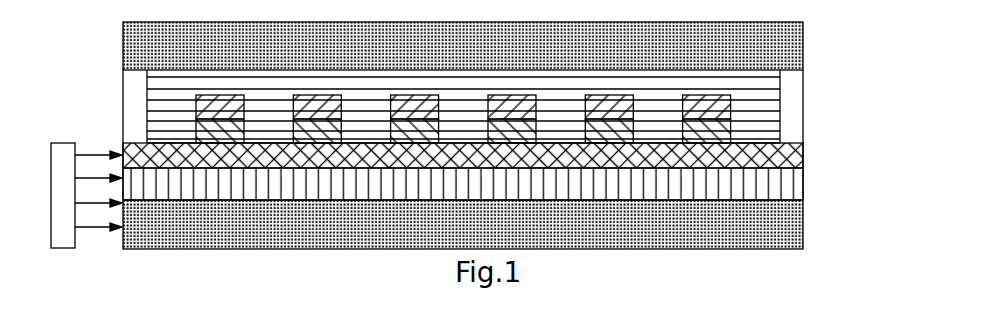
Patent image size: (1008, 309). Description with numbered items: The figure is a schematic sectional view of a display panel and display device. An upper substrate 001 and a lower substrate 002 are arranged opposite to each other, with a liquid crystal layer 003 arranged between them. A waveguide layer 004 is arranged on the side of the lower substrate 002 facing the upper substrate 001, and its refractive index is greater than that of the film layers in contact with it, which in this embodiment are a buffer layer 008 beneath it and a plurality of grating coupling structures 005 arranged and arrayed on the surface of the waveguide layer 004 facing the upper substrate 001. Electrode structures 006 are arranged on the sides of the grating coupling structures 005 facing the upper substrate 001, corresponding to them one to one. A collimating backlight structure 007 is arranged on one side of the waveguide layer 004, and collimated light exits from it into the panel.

The upper substrate 001 is at (790, 47).
The lower substrate 002 is at (803, 223).
The liquid crystal layer 003 is at (770, 80).
The waveguide layer 004 is at (803, 154).
The grating coupling structures 005 is at (740, 126).
The electrode structures 006 is at (780, 104).
The collimating backlight structure 007 is at (70, 152).
The buffer layer 008 is at (790, 185).